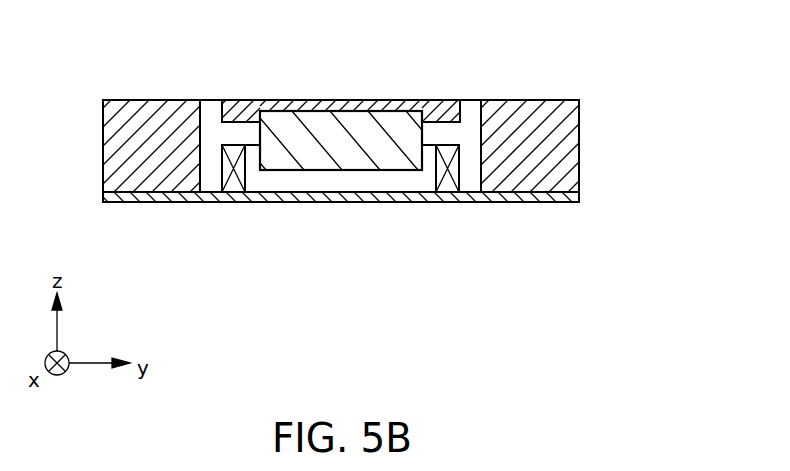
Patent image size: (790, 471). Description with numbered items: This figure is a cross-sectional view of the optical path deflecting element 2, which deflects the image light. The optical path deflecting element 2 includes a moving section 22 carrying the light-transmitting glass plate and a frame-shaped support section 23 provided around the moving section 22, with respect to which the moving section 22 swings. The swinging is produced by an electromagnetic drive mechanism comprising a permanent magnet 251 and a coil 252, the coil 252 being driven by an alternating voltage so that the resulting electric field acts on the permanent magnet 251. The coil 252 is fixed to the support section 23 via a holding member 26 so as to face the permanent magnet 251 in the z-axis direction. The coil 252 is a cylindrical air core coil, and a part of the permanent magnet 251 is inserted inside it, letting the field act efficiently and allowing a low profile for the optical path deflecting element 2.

The optical path deflecting element 2 is at (142, 85).
The moving section 22 is at (438, 112).
The support section 23 is at (563, 142).
The holding member 26 is at (513, 197).
The permanent magnet 251 is at (332, 132).
The coil 252 is at (237, 180).